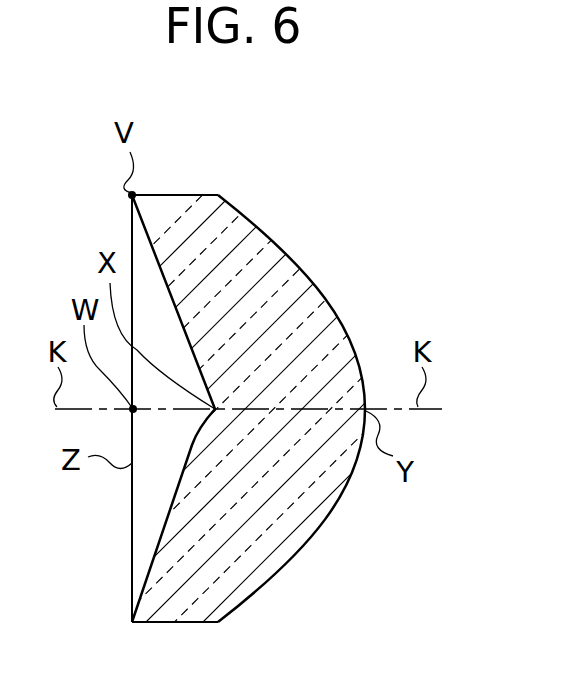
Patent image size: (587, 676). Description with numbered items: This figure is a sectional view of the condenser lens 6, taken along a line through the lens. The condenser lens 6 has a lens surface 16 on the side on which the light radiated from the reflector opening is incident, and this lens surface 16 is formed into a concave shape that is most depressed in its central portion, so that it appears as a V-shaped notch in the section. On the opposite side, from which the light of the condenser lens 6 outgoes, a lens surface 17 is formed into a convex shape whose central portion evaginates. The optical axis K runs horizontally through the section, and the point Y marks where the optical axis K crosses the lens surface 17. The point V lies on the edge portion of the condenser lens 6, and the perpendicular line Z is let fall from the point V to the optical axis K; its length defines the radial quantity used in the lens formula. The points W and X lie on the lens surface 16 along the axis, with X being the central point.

The condenser lens 6 is at (317, 193).
The lens surface 16 is at (163, 527).
The lens surface 17 is at (316, 286).